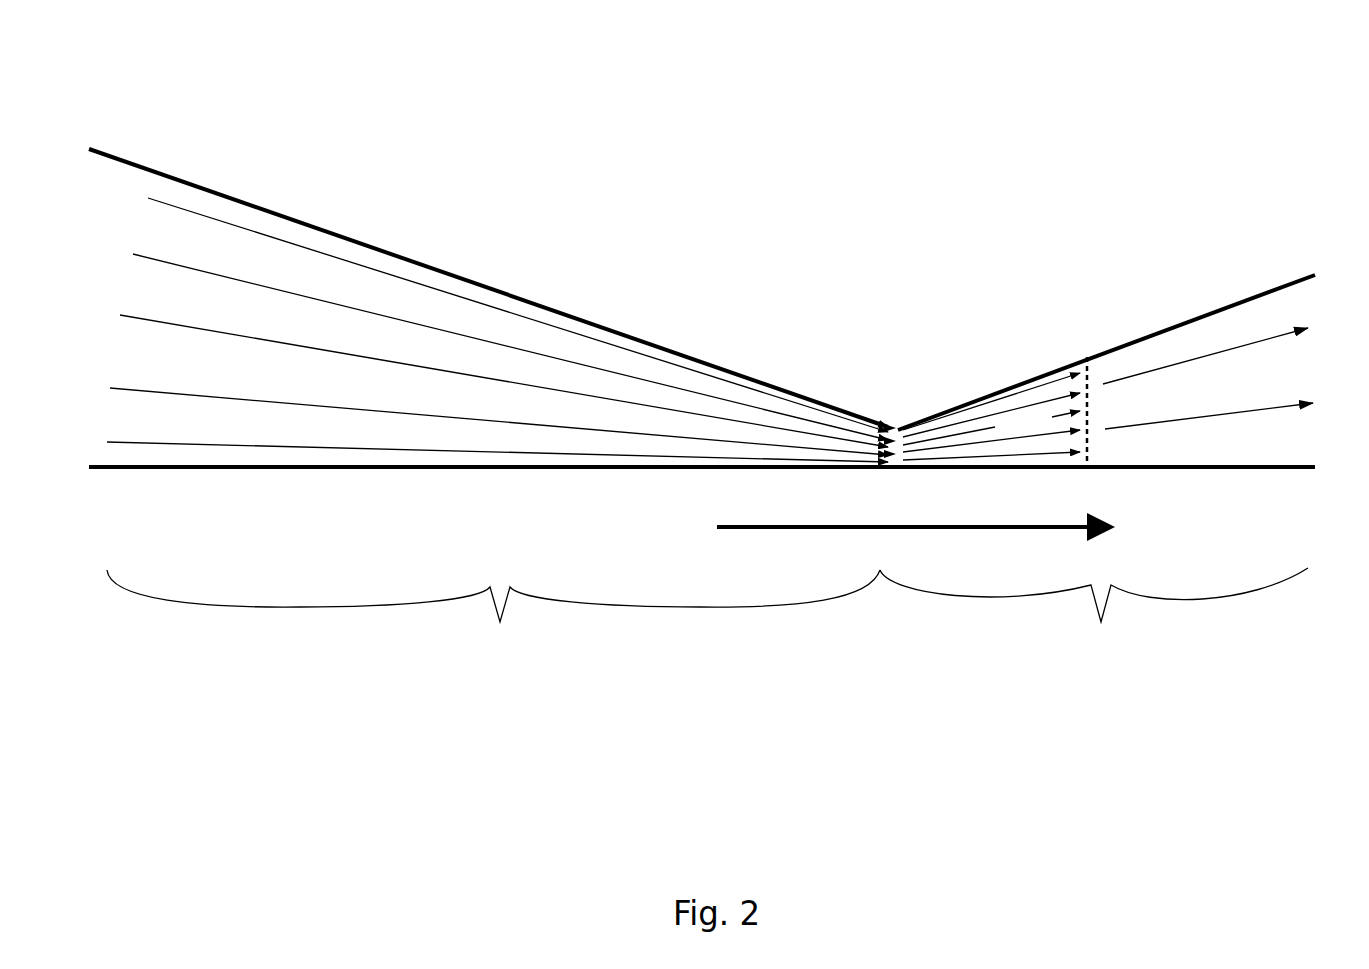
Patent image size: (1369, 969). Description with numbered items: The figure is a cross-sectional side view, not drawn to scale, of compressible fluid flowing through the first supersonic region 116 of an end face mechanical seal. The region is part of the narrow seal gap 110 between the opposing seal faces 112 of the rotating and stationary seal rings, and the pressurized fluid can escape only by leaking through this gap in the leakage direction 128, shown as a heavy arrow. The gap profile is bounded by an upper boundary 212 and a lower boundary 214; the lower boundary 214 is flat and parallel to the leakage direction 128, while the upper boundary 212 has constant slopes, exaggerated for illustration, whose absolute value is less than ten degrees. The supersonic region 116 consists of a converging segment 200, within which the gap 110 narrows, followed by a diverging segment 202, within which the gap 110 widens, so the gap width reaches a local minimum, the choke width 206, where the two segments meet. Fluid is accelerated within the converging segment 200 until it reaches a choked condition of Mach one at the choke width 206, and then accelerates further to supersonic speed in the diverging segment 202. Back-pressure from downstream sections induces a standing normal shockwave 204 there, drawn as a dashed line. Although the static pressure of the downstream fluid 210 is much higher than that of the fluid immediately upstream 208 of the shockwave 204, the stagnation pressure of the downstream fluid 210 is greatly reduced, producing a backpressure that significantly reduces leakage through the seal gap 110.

The seal gap 110 is at (128, 292).
The seal face 112 is at (383, 250).
The first supersonic region 116 is at (723, 143).
The leakage direction 128 is at (900, 527).
The converging segment 200 is at (493, 626).
The diverging segment 202 is at (1094, 620).
The shockwave 204 is at (1090, 380).
The choke width 206 is at (900, 425).
The fluid immediately upstream of the shockwave 208 is at (1044, 434).
The downstream fluid 210 is at (1169, 412).
The upper boundary 212 is at (550, 308).
The lower boundary 214 is at (537, 470).